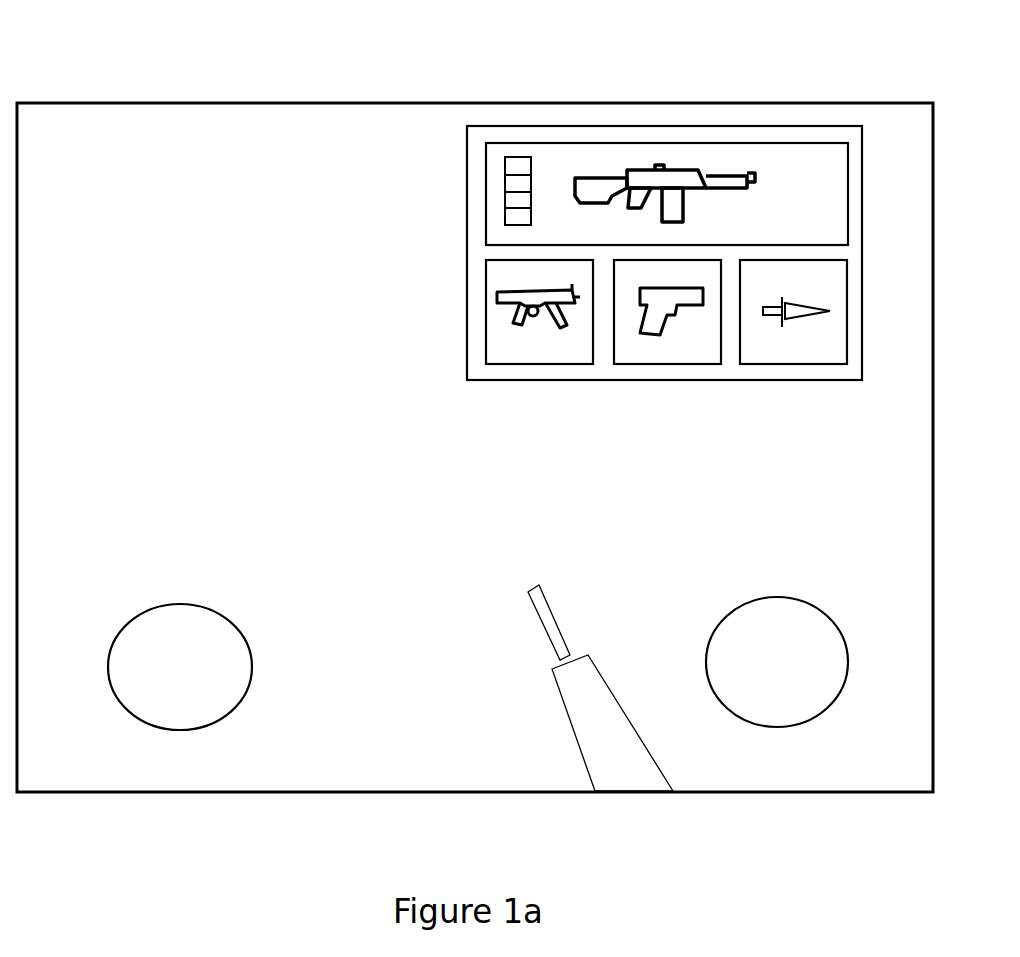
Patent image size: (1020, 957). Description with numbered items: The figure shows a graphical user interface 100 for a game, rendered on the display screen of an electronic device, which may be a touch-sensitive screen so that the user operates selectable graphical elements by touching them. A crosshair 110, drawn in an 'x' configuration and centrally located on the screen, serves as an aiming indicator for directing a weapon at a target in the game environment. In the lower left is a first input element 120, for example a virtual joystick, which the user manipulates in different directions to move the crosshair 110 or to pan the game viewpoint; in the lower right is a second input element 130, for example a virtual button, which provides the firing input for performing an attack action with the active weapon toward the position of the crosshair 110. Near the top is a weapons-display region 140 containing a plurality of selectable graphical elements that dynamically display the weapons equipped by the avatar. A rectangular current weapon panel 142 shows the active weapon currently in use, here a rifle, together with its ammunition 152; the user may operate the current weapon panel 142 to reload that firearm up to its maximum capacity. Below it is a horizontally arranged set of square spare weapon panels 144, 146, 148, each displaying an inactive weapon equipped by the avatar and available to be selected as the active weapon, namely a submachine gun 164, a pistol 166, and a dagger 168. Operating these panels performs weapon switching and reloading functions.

The graphical user interface 100 is at (195, 77).
The crosshair 110 is at (428, 472).
The first input element 120 is at (200, 681).
The second input element 130 is at (798, 677).
The weapons-display region 140 is at (453, 223).
The current weapon panel 142 is at (828, 234).
The spare weapon panel 144 is at (573, 364).
The spare weapon panel 146 is at (707, 364).
The spare weapon panel 148 is at (823, 364).
The ammunition 152 is at (507, 155).
The submachine gun 164 is at (513, 331).
The pistol 166 is at (651, 336).
The dagger 168 is at (785, 325).